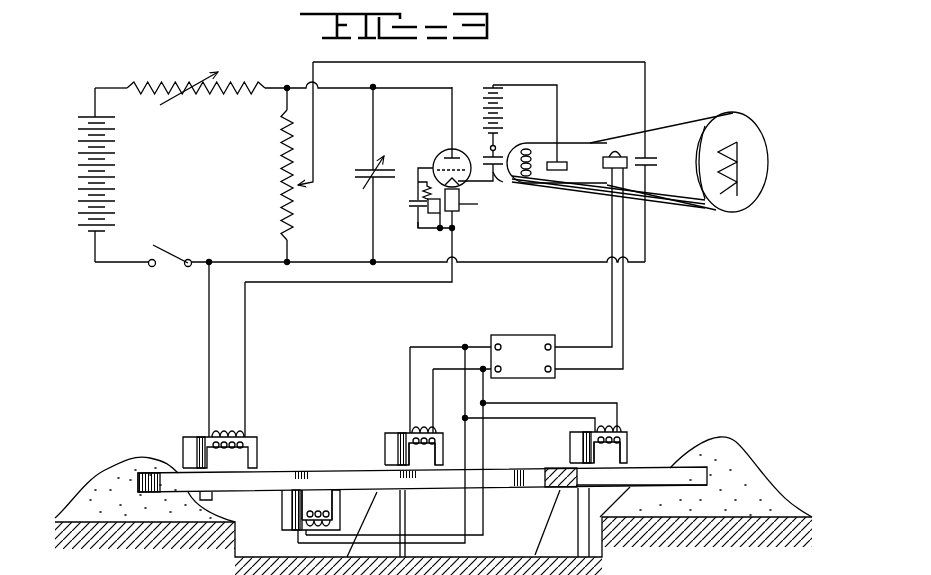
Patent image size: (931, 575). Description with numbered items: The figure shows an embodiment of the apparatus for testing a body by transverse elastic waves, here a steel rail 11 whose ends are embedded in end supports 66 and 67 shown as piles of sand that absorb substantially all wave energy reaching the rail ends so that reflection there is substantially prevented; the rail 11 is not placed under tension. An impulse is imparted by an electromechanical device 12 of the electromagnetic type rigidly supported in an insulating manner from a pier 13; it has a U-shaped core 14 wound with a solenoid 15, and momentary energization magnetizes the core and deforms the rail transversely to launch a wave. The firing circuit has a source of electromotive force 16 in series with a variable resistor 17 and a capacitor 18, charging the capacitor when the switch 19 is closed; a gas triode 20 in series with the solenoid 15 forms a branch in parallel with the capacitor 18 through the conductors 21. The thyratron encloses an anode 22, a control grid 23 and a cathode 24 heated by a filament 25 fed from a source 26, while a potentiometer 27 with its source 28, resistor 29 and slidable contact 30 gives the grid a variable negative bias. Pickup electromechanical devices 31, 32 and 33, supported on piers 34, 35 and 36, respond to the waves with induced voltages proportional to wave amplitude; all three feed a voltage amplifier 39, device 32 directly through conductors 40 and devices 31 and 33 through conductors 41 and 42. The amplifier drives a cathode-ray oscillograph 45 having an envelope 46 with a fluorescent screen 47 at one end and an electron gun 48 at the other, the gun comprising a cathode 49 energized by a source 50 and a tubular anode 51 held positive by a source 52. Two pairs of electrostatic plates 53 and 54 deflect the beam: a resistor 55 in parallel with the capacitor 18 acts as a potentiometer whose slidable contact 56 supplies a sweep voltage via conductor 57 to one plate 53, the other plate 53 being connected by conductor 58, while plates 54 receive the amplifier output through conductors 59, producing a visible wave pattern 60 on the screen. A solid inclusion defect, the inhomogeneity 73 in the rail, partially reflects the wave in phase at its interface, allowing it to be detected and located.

The rail 11 is at (340, 472).
The electromechanical device 12 is at (231, 434).
The pier 13 is at (212, 497).
The core 14 is at (204, 438).
The solenoid 15 is at (228, 425).
The source of electromotive force 16 is at (116, 176).
The variable resistor 17 is at (162, 86).
The capacitor 18 is at (366, 168).
The switch 19 is at (172, 256).
The gas triode 20 is at (437, 163).
The conductors 21 is at (211, 362).
The anode 22 is at (449, 156).
The control grid 23 is at (466, 166).
The cathode 24 is at (469, 174).
The filament 25 is at (464, 209).
The source of electromotive force 26 is at (478, 205).
The potentiometer 27 is at (409, 204).
The source of electromotive force 28 is at (416, 224).
The resistor 29 is at (436, 215).
The slidable contact 30 is at (425, 190).
The electromechanical device 31 is at (305, 516).
The electromechanical device 32 is at (425, 437).
The electromechanical device 33 is at (610, 436).
The pier 34 is at (280, 540).
The pier 35 is at (406, 511).
The pier 36 is at (552, 518).
The voltage amplifier 39 is at (527, 335).
The conductors 40 is at (434, 365).
The conductors 41 is at (488, 508).
The conductors 42 is at (570, 403).
The oscillograph 45 is at (582, 143).
The envelope 46 is at (663, 128).
The fluorescent screen 47 is at (761, 140).
The electron gun 48 is at (545, 183).
The cathode 49 is at (531, 160).
The source of electromotive force 50 is at (498, 180).
The tubular anode 51 is at (568, 164).
The source of electromotive force 52 is at (503, 112).
The electrostatic plates 53 is at (657, 161).
The electrostatic plates 54 is at (616, 153).
The resistor 55 is at (283, 150).
The slidable contact 56 is at (299, 187).
The conductor 57 is at (555, 62).
The conductor 58 is at (525, 262).
The conductors 59 is at (628, 298).
The wave pattern 60 is at (718, 162).
The end support 66 is at (108, 476).
The end support 67 is at (725, 450).
The inhomogeneity 73 is at (580, 481).